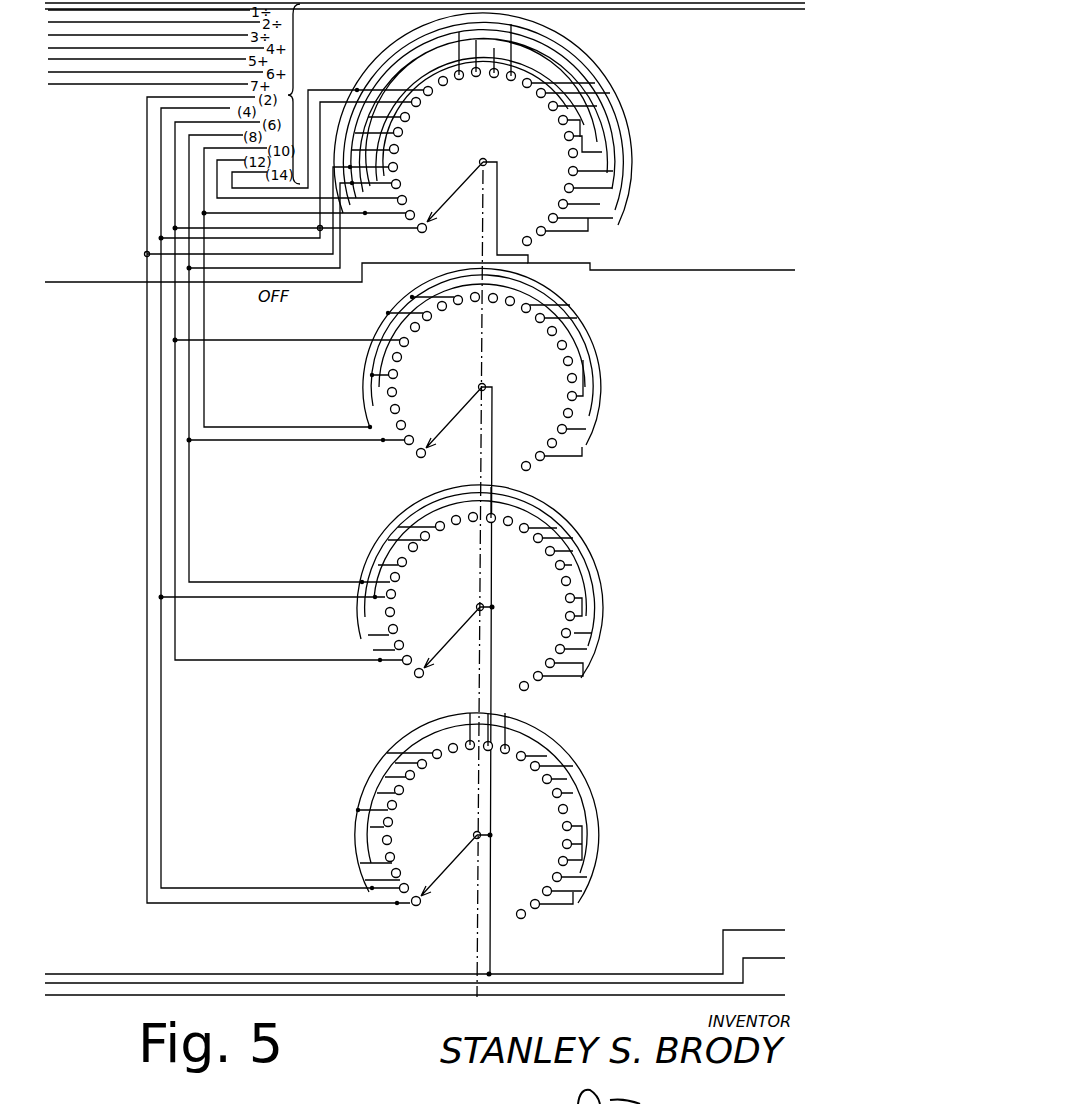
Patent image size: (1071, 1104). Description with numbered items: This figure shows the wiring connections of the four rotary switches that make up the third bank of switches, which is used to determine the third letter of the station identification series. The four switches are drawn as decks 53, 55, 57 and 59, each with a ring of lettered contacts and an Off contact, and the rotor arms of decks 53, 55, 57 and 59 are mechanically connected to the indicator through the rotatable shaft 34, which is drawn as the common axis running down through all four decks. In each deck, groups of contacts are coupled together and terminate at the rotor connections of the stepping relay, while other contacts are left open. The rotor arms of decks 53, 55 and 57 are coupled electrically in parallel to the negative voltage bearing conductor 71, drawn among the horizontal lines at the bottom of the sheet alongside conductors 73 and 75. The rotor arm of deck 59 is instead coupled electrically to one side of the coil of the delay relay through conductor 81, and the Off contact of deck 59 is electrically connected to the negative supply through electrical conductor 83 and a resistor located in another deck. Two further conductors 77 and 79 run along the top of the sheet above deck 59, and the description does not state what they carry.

The rotatable shaft 34 is at (476, 955).
The deck 53 is at (477, 821).
The deck 55 is at (480, 593).
The deck 57 is at (482, 375).
The deck 59 is at (483, 133).
The conductor 71 is at (768, 931).
The conductor 73 is at (760, 958).
The conductor 75 is at (761, 994).
The conductor 77 is at (697, 4).
The conductor 79 is at (747, 11).
The conductor 81 is at (735, 271).
The electrical conductor 83 is at (92, 284).